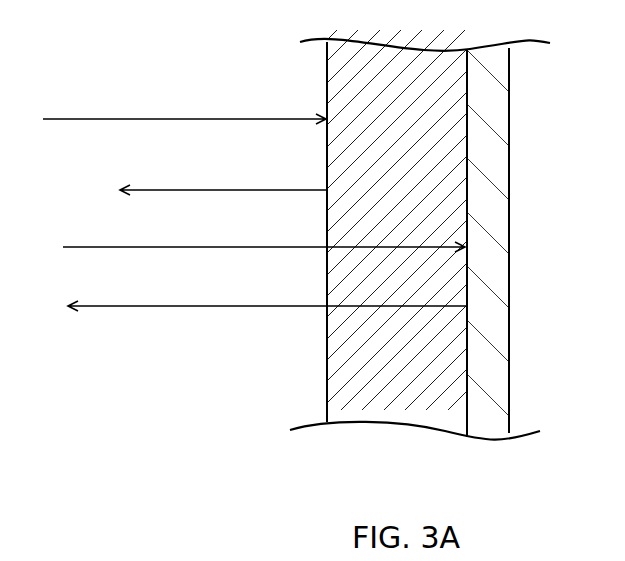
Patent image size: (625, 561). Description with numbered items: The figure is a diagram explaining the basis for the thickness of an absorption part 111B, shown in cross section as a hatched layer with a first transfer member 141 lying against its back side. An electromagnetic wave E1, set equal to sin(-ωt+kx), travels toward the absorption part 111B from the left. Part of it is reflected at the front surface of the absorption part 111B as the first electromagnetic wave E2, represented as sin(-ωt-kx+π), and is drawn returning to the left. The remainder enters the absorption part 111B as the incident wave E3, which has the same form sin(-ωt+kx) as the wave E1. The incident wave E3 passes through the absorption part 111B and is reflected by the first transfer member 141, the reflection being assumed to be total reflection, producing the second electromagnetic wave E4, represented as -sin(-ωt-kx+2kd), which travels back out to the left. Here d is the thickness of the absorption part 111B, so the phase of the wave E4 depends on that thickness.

The absorption part 111B is at (417, 403).
The first transfer member 141 is at (492, 337).
The electromagnetic wave E1 is at (170, 119).
The first electromagnetic wave E2 is at (236, 190).
The incident wave E3 is at (442, 245).
The second electromagnetic wave E4 is at (225, 306).